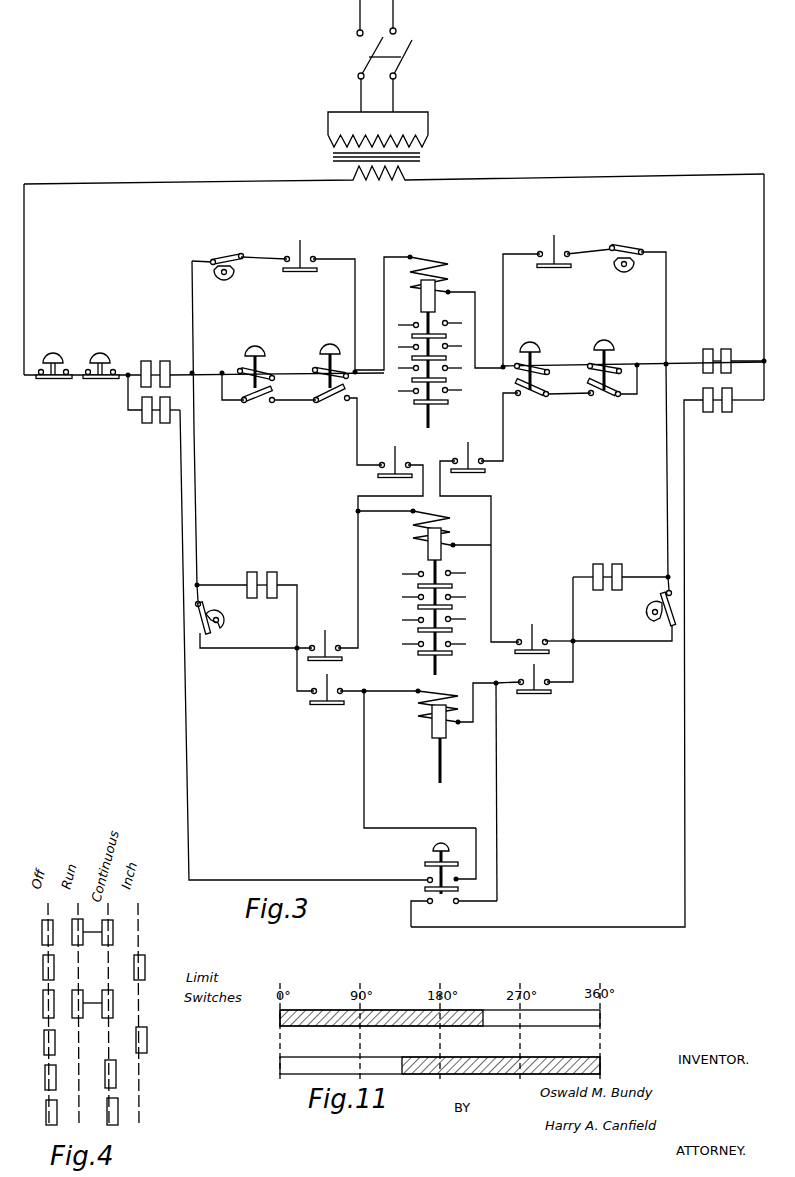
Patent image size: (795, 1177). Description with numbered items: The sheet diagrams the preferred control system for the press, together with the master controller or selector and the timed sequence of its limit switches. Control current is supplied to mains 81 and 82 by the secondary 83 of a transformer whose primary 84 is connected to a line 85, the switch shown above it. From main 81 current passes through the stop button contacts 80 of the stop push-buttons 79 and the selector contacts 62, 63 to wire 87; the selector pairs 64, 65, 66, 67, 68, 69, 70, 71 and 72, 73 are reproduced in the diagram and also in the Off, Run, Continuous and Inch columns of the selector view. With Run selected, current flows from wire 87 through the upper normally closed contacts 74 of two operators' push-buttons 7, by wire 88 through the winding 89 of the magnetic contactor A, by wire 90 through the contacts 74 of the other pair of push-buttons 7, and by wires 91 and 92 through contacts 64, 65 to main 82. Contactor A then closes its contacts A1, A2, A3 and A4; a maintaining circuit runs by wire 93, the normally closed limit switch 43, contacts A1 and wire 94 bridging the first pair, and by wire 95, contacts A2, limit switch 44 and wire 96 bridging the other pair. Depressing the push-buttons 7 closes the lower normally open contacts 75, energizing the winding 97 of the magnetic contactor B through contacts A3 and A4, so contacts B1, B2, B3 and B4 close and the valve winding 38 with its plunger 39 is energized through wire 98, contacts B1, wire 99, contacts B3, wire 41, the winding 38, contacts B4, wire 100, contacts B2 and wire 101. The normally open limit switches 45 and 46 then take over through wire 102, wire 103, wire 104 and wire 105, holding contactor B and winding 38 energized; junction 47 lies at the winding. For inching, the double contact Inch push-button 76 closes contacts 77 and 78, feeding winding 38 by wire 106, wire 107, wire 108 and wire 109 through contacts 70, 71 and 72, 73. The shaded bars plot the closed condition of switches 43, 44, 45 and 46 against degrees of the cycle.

In FIG. 3, the line 85 is at (394, 20).
In FIG. 3, the primary 84 is at (420, 143).
In FIG. 3, the secondary 83 is at (399, 183).
In FIG. 3, the main 81 is at (26, 303).
In FIG. 3, the main 82 is at (762, 278).
In FIG. 3, the stop push-button 79 is at (70, 348).
In FIG. 3, the stop button contacts 80 is at (68, 364).
In FIG. 3, the selector contact 62 is at (148, 360).
In FIG. 4, the selector contact 62 is at (50, 919).
In FIG. 3, the selector contact 63 is at (166, 360).
In FIG. 4, the selector contact 63 is at (79, 918).
In FIG. 3, the selector contact 70 is at (148, 424).
In FIG. 4, the selector contact 70 is at (54, 960).
In FIG. 3, the selector contact 71 is at (165, 424).
In FIG. 4, the selector contact 71 is at (142, 955).
In FIG. 3, the selector contact 64 is at (708, 348).
In FIG. 4, the selector contact 64 is at (52, 990).
In FIG. 3, the selector contact 65 is at (726, 348).
In FIG. 4, the selector contact 65 is at (80, 989).
In FIG. 3, the selector contact 72 is at (708, 413).
In FIG. 4, the selector contact 72 is at (55, 1036).
In FIG. 3, the selector contact 73 is at (727, 413).
In FIG. 4, the selector contact 73 is at (143, 1027).
In FIG. 3, the selector contact 66 is at (252, 571).
In FIG. 4, the selector contact 66 is at (56, 1068).
In FIG. 3, the selector contact 67 is at (273, 571).
In FIG. 4, the selector contact 67 is at (113, 1059).
In FIG. 3, the selector contact 68 is at (599, 563).
In FIG. 4, the selector contact 68 is at (57, 1102).
In FIG. 3, the selector contact 69 is at (618, 563).
In FIG. 4, the selector contact 69 is at (116, 1098).
In FIG. 3, the wire 87 is at (187, 378).
In FIG. 3, the wire 93 is at (196, 330).
In FIG. 3, the wire 94 is at (353, 308).
In FIG. 3, the wire 95 is at (505, 305).
In FIG. 3, the wire 96 is at (668, 300).
In FIG. 3, the wire 88 is at (382, 338).
In FIG. 3, the wire 90 is at (476, 318).
In FIG. 3, the wire 91 is at (652, 364).
In FIG. 3, the wire 92 is at (682, 364).
In FIG. 3, the wire 98 is at (360, 540).
In FIG. 3, the wire 99 is at (296, 673).
In FIG. 3, the wire 100 is at (575, 662).
In FIG. 3, the wire 101 is at (493, 593).
In FIG. 3, the wire 102 is at (197, 505).
In FIG. 3, the wire 103 is at (245, 650).
In FIG. 3, the wire 104 is at (635, 643).
In FIG. 3, the wire 105 is at (667, 478).
In FIG. 3, the wire 106 is at (366, 752).
In FIG. 3, the wire 107 is at (447, 832).
In FIG. 3, the wire 108 is at (498, 757).
In FIG. 3, the wire 109 is at (590, 920).
In FIG. 3, the limit switch 43 is at (230, 256).
In FIG. 11, the limit switch 43 is at (412, 1018).
In FIG. 3, the limit switch 44 is at (630, 246).
In FIG. 11, the limit switch 44 is at (412, 1018).
In FIG. 3, the limit switch 45 is at (212, 603).
In FIG. 11, the limit switch 45 is at (414, 1065).
In FIG. 3, the limit switch 46 is at (666, 590).
In FIG. 11, the limit switch 46 is at (414, 1065).
In FIG. 3, the operators' push-button 7 is at (294, 377).
In FIG. 3, the normally closed contacts 74 is at (268, 364).
In FIG. 3, the normally open contacts 75 is at (265, 404).
In FIG. 3, the winding 89 is at (450, 264).
In FIG. 3, the winding 97 is at (452, 520).
In FIG. 3, the magnetic contactor A is at (417, 316).
In FIG. 3, the contacts A1 is at (312, 253).
In FIG. 3, the contacts A2 is at (448, 340).
In FIG. 3, the contacts A3 is at (448, 360).
In FIG. 3, the contacts A4 is at (448, 384).
In FIG. 3, the magnetic contactor B is at (417, 567).
In FIG. 3, the contacts B1 is at (334, 643).
In FIG. 3, the contacts B2 is at (452, 591).
In FIG. 3, the contacts B3 is at (337, 686).
In FIG. 3, the contacts B4 is at (452, 638).
In FIG. 3, the valve winding 38 is at (422, 698).
In FIG. 3, the plunger 39 is at (447, 733).
In FIG. 3, the circuit wire 41 is at (393, 688).
In FIG. 3, the conductor junction 47 is at (495, 680).
In FIG. 3, the inch push-button 76 is at (436, 849).
In FIG. 3, the normally open contacts 77 is at (427, 882).
In FIG. 3, the normally open contacts 78 is at (434, 900).